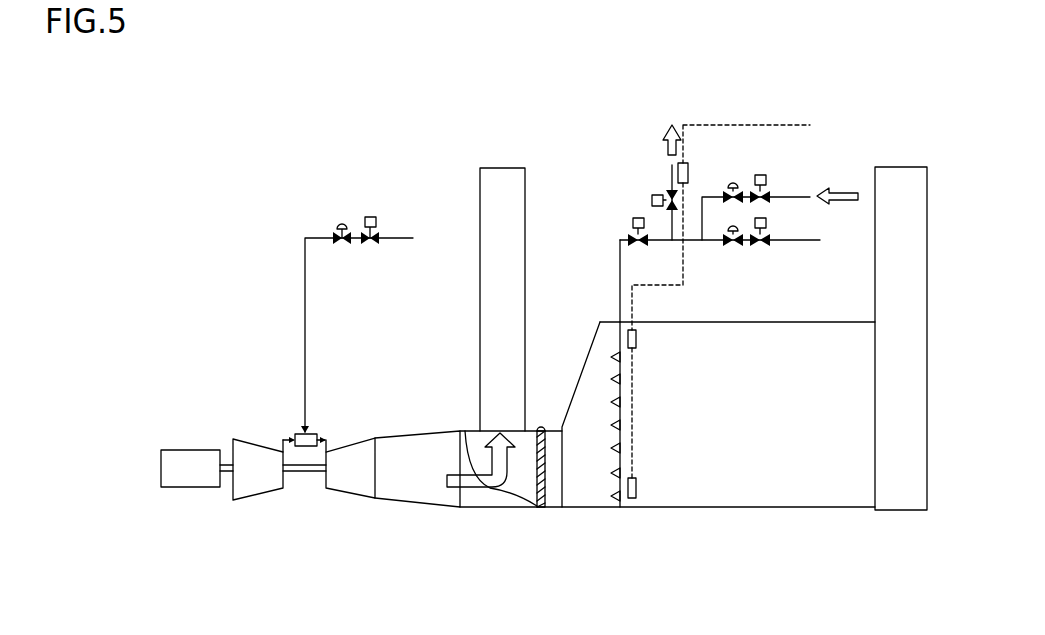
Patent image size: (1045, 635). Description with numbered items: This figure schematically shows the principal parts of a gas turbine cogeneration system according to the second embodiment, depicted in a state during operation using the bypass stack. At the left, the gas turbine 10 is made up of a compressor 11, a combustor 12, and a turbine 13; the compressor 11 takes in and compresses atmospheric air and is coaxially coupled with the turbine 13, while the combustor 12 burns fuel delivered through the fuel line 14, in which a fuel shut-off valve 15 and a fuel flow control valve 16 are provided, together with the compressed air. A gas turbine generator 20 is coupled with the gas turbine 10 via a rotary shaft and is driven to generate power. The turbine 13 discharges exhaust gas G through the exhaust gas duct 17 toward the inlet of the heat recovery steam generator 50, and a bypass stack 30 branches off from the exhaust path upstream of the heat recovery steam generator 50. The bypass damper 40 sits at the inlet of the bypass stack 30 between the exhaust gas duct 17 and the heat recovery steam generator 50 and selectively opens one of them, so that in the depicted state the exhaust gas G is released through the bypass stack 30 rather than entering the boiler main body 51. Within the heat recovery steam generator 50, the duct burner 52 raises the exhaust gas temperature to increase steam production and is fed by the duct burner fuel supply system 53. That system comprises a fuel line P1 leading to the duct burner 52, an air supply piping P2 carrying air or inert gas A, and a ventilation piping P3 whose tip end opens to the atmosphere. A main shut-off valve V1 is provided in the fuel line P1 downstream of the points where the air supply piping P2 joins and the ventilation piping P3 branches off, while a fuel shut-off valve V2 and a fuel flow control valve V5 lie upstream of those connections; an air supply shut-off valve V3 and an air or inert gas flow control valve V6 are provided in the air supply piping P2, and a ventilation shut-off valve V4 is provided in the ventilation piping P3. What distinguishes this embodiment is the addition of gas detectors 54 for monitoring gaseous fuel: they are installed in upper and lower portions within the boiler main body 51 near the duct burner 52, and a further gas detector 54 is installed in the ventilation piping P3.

The gas turbine 10 is at (304, 449).
The compressor 11 is at (258, 500).
The combustor 12 is at (313, 434).
The turbine 13 is at (349, 499).
The fuel line 14 is at (304, 300).
The fuel shut-off valve 15 is at (371, 215).
The fuel flow control valve 16 is at (342, 222).
The exhaust gas duct 17 is at (417, 508).
The gas turbine generator 20 is at (190, 449).
The bypass stack 30 is at (480, 302).
The bypass damper 40 is at (490, 491).
The heat recovery steam generator 50 is at (744, 349).
The boiler main body 51 is at (820, 320).
The duct burner 52 is at (611, 415).
The duct burner fuel supply system 53 is at (715, 223).
The gas detector 54 is at (688, 172).
The exhaust gas G is at (467, 464).
The gas A is at (839, 182).
The fuel line P1 is at (618, 302).
The air supply piping P2 is at (801, 196).
The ventilation piping P3 is at (671, 181).
The main shut-off valve V1 is at (637, 248).
The fuel shut-off valve V2 is at (762, 248).
The air supply shut-off valve V3 is at (763, 173).
The ventilation shut-off valve V4 is at (652, 201).
The fuel flow control valve V5 is at (731, 248).
The air or inert gas flow control valve V6 is at (733, 180).